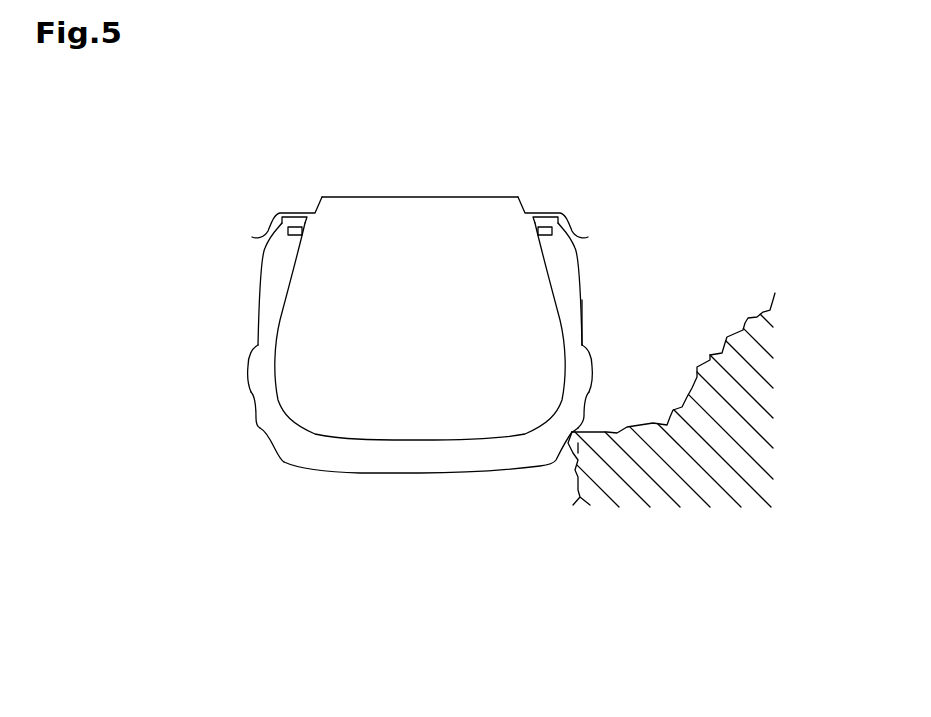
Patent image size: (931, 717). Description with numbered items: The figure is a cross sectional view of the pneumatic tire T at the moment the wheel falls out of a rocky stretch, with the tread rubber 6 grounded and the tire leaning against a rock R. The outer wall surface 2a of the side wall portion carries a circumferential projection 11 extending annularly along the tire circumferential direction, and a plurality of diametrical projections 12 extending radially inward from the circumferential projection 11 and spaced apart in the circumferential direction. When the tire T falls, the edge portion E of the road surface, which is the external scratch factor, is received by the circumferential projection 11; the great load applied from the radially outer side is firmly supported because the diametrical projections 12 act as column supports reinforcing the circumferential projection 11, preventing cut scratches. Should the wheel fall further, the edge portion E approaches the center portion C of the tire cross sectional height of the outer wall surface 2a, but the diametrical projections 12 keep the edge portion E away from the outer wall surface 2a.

The pneumatic tire T is at (280, 497).
The tread rubber 6 is at (405, 465).
The diametrical projections 12 is at (243, 363).
The outer wall surface 2a is at (250, 392).
The circumferential projection 11 is at (266, 440).
The center portion C is at (589, 327).
The rock R is at (710, 357).
The edge portion E is at (573, 470).